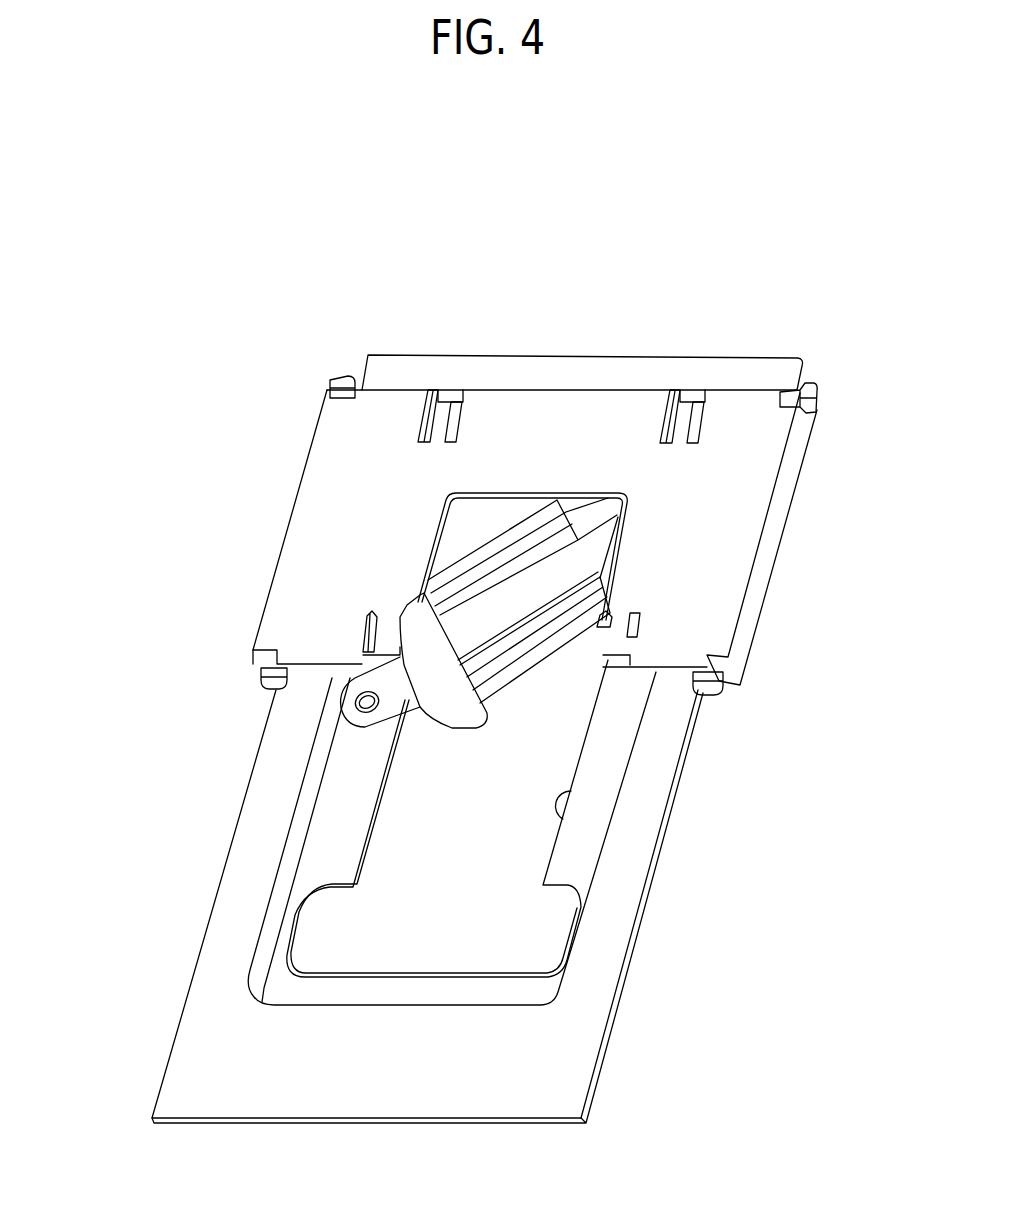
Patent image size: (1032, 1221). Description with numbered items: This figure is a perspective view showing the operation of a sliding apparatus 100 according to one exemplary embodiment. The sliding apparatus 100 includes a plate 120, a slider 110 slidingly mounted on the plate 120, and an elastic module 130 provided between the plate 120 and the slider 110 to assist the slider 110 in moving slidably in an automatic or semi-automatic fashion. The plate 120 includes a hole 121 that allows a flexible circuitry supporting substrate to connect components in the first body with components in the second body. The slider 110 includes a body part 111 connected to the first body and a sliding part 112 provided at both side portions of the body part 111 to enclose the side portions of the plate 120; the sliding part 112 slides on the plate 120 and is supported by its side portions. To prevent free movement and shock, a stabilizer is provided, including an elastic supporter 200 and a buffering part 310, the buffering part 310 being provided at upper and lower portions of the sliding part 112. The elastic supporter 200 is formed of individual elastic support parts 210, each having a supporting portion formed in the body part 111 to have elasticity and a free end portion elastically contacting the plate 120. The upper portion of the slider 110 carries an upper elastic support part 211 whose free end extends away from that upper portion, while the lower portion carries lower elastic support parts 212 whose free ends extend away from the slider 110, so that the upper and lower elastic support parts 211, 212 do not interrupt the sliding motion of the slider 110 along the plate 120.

The sliding apparatus 100 is at (526, 243).
The slider 110 is at (812, 494).
The body part 111 is at (735, 548).
The sliding part 112 is at (750, 609).
The plate 120 is at (617, 954).
The hole 121 is at (570, 815).
The elastic module 130 is at (536, 691).
The elastic supporter 200 is at (374, 514).
The elastic support part 210 is at (192, 400).
The upper elastic support part 211 is at (443, 427).
The lower elastic support part 212 is at (610, 628).
The buffering part 310 is at (338, 380).